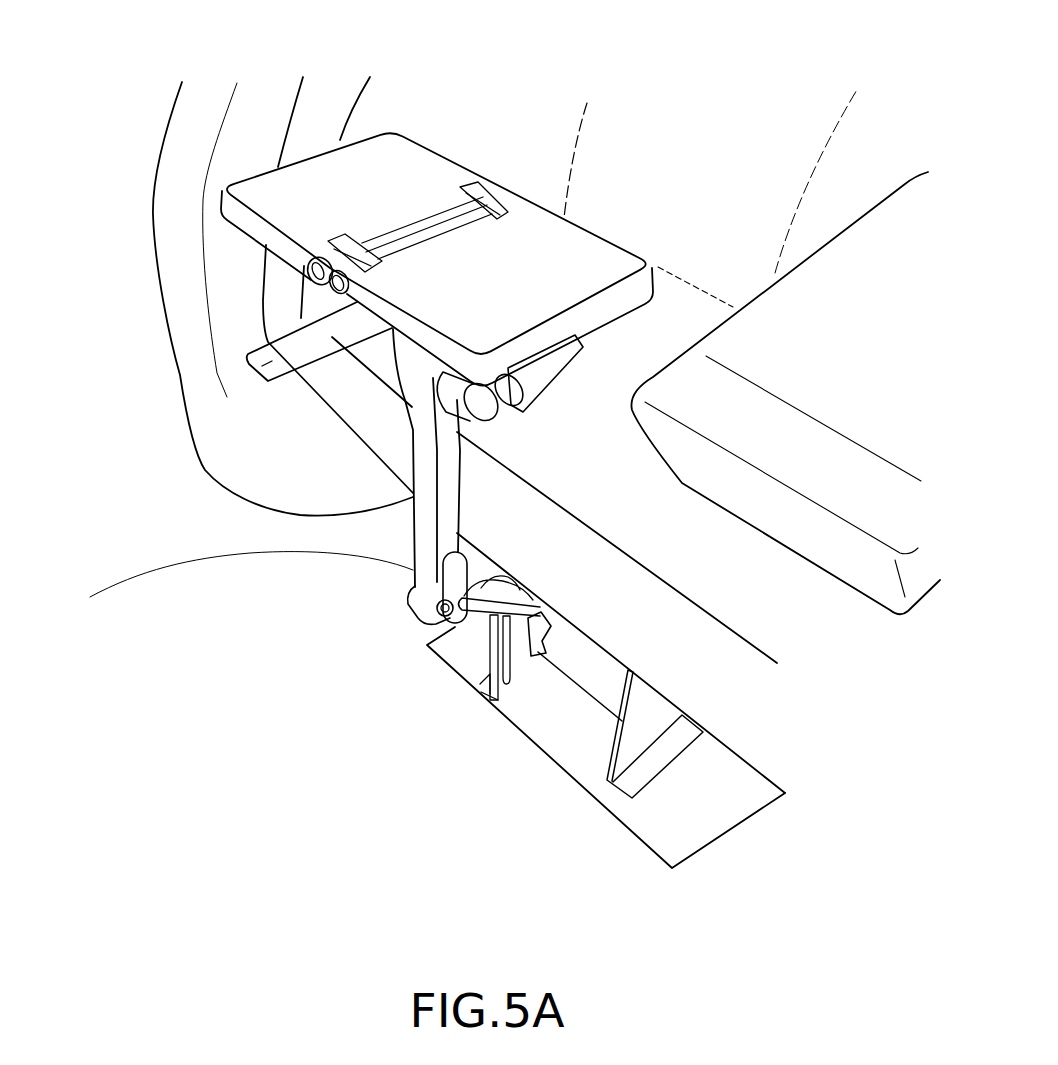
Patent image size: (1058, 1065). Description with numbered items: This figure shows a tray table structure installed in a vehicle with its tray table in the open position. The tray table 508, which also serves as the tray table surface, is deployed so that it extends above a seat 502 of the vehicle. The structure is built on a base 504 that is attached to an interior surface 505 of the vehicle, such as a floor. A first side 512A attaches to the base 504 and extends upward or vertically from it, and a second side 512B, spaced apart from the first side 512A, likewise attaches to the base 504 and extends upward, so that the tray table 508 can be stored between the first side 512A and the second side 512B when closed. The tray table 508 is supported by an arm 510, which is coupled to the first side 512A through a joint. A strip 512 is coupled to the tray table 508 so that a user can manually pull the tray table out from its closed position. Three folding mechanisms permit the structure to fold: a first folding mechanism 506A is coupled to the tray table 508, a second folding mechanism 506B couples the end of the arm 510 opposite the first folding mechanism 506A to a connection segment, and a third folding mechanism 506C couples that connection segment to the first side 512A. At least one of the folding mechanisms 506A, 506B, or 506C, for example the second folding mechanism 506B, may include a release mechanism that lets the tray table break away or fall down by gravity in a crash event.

The seat 502 is at (737, 718).
The base 504 is at (658, 755).
The interior surface 505 is at (177, 580).
The first folding mechanism 506A is at (450, 395).
The second folding mechanism 506B is at (425, 603).
The third folding mechanism 506C is at (525, 672).
The tray table 508 is at (403, 168).
The arm 510 is at (427, 527).
The strip 512 is at (265, 363).
The first side 512A is at (497, 660).
The second side 512B is at (627, 733).